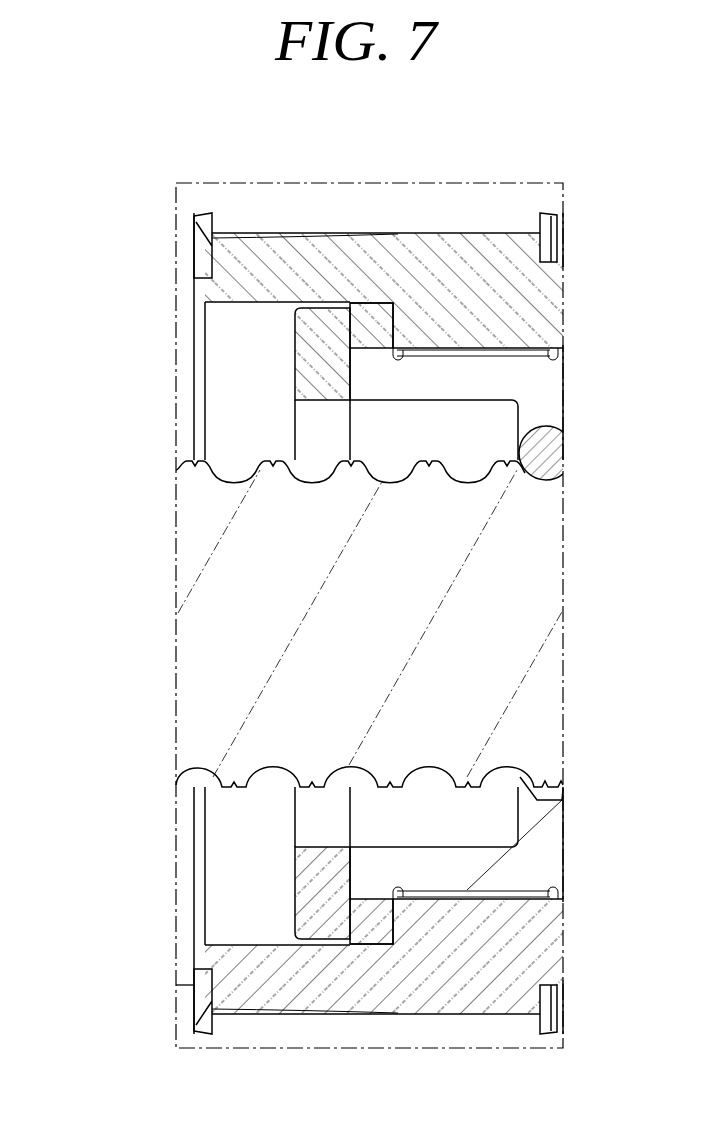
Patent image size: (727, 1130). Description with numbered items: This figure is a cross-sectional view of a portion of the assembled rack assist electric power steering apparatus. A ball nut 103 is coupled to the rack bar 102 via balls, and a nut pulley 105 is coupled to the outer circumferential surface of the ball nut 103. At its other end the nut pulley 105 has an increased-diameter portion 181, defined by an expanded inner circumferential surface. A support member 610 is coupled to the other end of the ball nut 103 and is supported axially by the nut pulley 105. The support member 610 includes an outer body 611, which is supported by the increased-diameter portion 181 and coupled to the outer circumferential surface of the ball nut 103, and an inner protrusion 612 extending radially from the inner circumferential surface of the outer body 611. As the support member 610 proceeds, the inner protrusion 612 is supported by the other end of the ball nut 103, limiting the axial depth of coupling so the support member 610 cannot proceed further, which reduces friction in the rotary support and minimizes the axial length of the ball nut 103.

The rack bar 102 is at (537, 573).
The ball nut 103 is at (535, 391).
The nut pulley 105 is at (537, 305).
The increased-diameter portion 181 is at (395, 324).
The support member 610 is at (216, 363).
The outer body 611 is at (379, 318).
The inner protrusion 612 is at (295, 376).